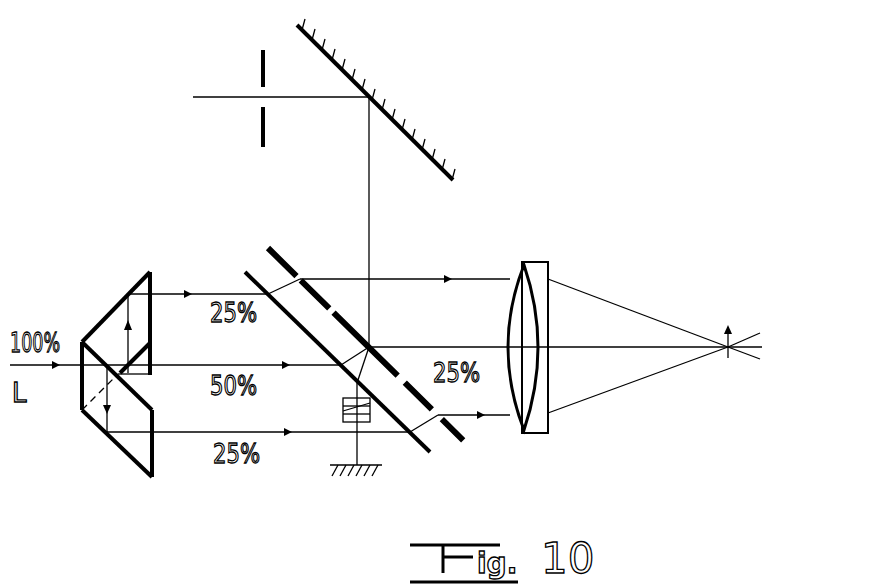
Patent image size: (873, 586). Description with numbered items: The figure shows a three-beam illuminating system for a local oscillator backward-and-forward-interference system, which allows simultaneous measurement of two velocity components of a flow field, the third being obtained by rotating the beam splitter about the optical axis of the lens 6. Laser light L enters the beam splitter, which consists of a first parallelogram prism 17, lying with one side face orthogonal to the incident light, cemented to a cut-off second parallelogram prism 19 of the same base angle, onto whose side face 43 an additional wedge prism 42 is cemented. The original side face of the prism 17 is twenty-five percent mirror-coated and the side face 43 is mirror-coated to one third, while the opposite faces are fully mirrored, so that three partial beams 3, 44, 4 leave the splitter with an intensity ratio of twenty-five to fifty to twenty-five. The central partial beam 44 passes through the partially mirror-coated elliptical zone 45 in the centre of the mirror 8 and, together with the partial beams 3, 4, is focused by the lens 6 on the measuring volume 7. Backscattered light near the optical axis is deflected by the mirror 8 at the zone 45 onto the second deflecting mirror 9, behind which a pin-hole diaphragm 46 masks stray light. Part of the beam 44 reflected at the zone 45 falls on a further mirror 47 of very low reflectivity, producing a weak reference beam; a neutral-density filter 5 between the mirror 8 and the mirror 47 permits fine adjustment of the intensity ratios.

The partial beam 3 is at (308, 440).
The partial beam 4 is at (319, 281).
The filter 5 is at (348, 424).
The lens 6 is at (528, 262).
The measuring volume 7 is at (742, 358).
The mirror 8 is at (427, 452).
The second deflecting mirror 9 is at (376, 97).
The first parallelogram prism 17 is at (127, 442).
The second parallelogram prism 19 is at (112, 332).
The wedge prism 42 is at (143, 369).
The side face 43 is at (147, 349).
The partial beam 44 is at (310, 363).
The elliptical zone 45 is at (386, 240).
The pin-hole diaphragm 46 is at (281, 95).
The further mirror 47 is at (330, 463).